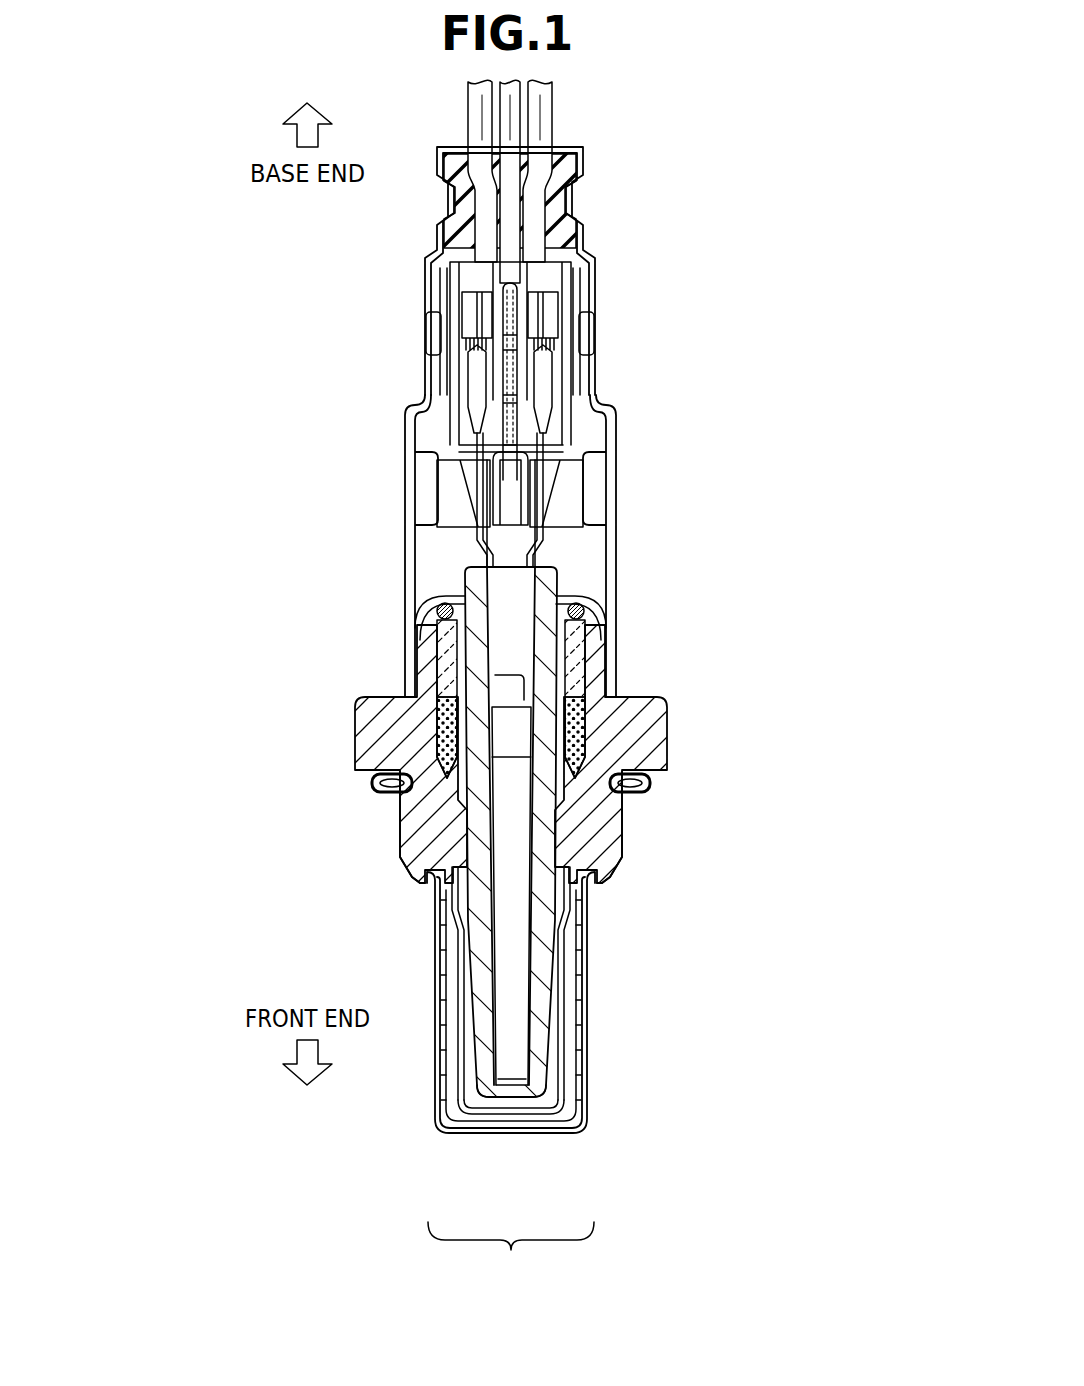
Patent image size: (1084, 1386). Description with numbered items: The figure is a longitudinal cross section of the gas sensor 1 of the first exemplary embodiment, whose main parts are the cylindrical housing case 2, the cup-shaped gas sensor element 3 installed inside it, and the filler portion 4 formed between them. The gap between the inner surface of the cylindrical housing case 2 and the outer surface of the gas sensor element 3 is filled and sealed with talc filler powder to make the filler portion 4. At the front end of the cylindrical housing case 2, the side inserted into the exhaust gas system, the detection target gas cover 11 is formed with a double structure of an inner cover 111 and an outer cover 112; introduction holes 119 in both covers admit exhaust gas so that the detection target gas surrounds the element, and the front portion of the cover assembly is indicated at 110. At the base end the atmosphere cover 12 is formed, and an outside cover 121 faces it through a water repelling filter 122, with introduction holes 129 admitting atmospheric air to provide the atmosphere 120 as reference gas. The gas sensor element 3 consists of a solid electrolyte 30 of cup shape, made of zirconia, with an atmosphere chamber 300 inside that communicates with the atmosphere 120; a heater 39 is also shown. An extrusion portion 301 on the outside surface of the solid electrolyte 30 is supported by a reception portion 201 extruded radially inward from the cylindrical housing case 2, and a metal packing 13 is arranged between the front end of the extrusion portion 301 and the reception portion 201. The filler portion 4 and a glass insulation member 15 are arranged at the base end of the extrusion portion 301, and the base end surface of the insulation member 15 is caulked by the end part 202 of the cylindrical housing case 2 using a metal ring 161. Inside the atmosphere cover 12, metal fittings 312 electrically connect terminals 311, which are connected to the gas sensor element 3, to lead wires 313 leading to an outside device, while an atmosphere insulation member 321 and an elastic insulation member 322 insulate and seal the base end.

The gas sensor 1 is at (696, 957).
The cylindrical housing case 2 is at (640, 729).
The gas sensor element 3 is at (597, 897).
The filler portion 4 is at (443, 737).
The detection target gas cover 11 is at (511, 1262).
The atmosphere cover 12 is at (612, 532).
The metal packing 13 is at (420, 842).
The insulation member 15 is at (447, 677).
The solid electrolyte 30 is at (483, 946).
The heater 39 is at (512, 816).
The protective cover bottom 110 is at (552, 1100).
The inner cover 111 is at (480, 1140).
The outer cover 112 is at (549, 1135).
The introduction holes 119 is at (566, 1063).
The atmosphere 120 is at (573, 559).
The outside cover 121 is at (593, 345).
The water repelling filter 122 is at (582, 310).
The introduction holes 129 is at (598, 330).
The metal ring 161 is at (440, 603).
The reception portion 201 is at (440, 815).
The end part 202 is at (443, 588).
The atmosphere chamber 300 is at (482, 1090).
The extrusion portion 301 is at (458, 782).
The terminals 311 is at (480, 538).
The metal fittings 312 is at (472, 385).
The lead wires 313 is at (480, 233).
The atmosphere insulation member 321 is at (588, 433).
The elastic insulation member 322 is at (548, 214).